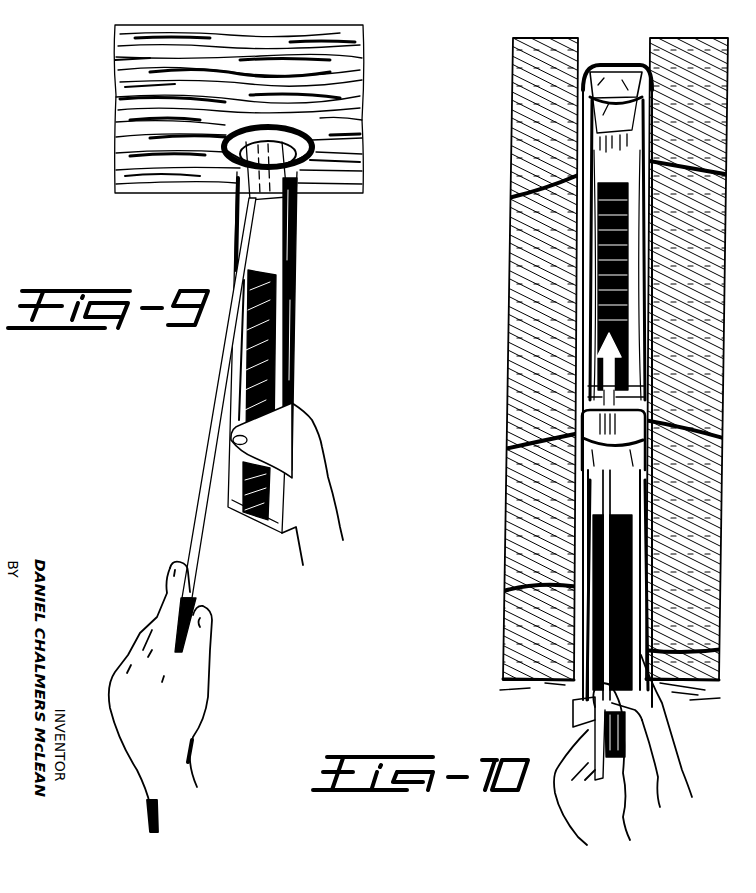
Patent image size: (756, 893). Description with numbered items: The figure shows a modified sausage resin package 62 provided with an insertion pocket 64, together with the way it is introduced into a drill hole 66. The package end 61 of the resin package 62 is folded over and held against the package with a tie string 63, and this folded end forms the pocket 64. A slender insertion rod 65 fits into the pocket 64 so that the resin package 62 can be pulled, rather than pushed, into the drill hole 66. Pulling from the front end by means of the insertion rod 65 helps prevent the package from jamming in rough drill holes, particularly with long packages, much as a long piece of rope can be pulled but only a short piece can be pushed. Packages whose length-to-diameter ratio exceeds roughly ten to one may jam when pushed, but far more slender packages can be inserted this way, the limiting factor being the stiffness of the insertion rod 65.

The package end 61 is at (293, 206).
The resin package 62 is at (297, 267).
The tie string 63 is at (300, 170).
The pocket 64 is at (240, 204).
The insertion rod 65 is at (221, 386).
The drill hole 66 is at (306, 138).